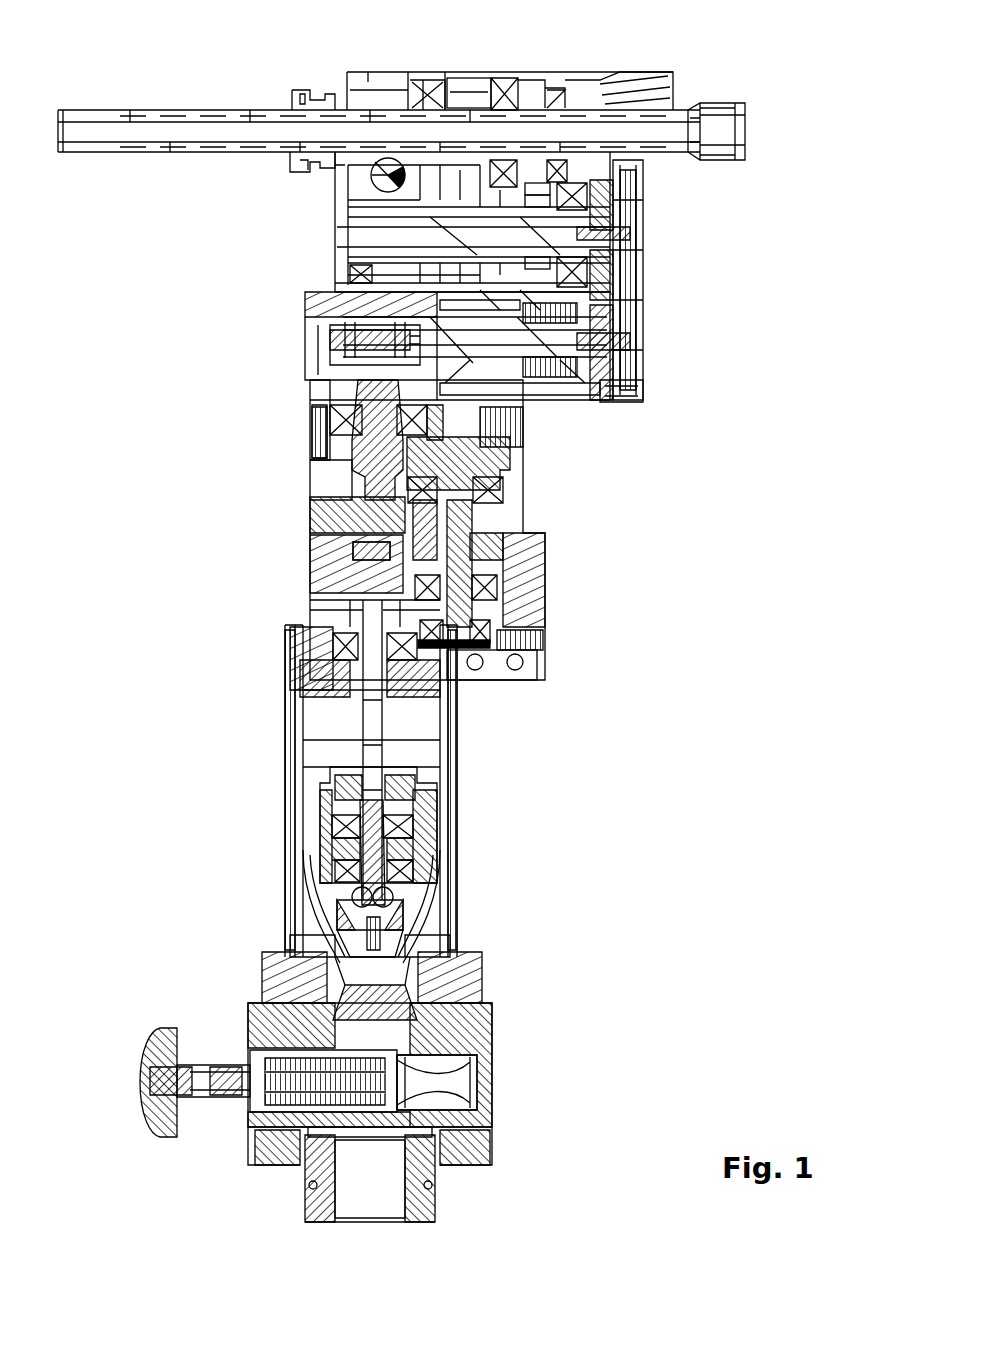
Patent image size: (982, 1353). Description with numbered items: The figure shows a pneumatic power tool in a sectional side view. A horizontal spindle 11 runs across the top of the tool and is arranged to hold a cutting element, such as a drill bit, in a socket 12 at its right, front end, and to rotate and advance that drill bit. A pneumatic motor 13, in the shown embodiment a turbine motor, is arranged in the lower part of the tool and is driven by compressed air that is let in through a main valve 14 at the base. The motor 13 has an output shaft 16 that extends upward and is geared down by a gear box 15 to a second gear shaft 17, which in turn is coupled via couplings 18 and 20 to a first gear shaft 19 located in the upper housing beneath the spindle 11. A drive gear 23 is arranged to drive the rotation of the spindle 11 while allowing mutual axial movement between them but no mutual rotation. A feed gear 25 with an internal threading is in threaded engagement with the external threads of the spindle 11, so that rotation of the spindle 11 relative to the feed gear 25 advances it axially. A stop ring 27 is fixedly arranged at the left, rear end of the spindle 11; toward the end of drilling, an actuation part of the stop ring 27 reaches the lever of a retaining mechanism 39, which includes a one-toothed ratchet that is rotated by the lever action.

The spindle 11 is at (101, 152).
The socket 12 is at (746, 100).
The pneumatic motor 13 is at (430, 840).
The main valve 14 is at (477, 1082).
The gear box 15 is at (540, 534).
The output shaft 16 is at (390, 700).
The second gear shaft 17 is at (508, 353).
The coupling 18 is at (610, 394).
The first gear shaft 19 is at (482, 222).
The coupling 20 is at (618, 194).
The drive gear 23 is at (531, 80).
The feed gear 25 is at (468, 76).
The stop ring 27 is at (300, 164).
The retaining mechanism 39 is at (368, 196).